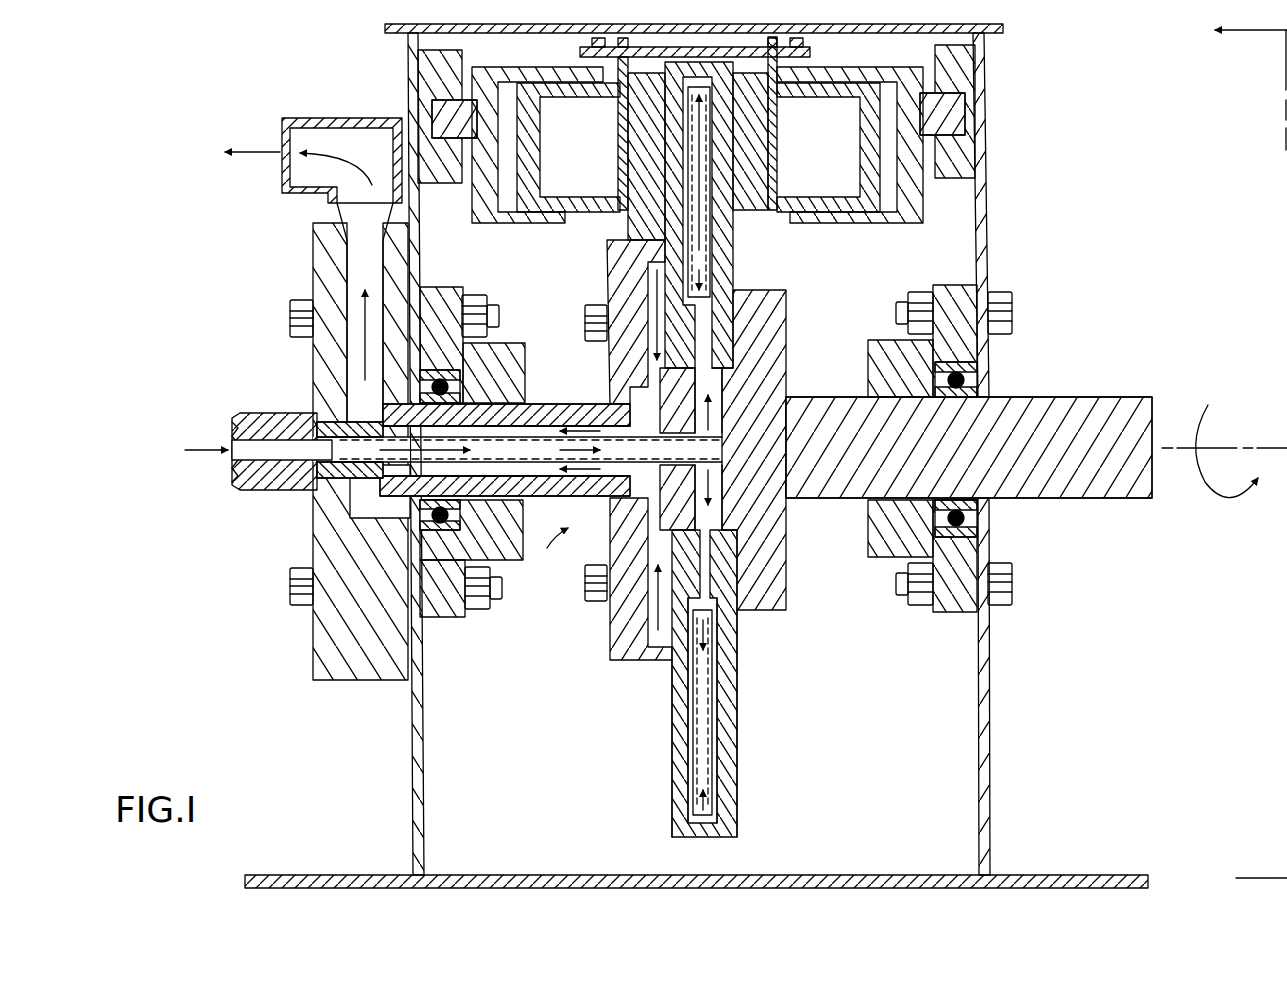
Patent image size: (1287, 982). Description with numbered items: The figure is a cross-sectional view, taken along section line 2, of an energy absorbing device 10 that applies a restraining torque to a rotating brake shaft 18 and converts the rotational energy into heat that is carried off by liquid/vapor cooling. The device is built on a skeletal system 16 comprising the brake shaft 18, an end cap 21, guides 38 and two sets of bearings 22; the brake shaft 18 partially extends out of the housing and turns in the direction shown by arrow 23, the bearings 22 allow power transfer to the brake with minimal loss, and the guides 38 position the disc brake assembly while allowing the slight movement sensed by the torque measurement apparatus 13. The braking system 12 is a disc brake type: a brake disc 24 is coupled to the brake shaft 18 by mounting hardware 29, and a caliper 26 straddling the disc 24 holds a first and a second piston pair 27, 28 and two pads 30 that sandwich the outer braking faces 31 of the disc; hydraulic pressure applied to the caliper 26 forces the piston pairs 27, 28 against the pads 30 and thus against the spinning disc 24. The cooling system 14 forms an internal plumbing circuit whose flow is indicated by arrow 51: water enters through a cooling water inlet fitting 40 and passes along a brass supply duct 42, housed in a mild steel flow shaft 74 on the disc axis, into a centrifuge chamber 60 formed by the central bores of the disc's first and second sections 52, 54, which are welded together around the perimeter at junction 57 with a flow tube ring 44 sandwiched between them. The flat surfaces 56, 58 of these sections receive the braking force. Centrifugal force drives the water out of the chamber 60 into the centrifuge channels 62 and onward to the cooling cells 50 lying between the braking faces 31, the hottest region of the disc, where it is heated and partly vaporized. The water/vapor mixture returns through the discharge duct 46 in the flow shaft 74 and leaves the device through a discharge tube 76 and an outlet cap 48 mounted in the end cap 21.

The section line 2- 2 is at (1233, 454).
The energy absorbing device 10 is at (1100, 212).
The braking system 12 is at (765, 250).
The torque measurement apparatus 13 is at (826, 56).
The cooling system 14 is at (568, 530).
The skeletal system 16 is at (1012, 745).
The brake shaft 18 is at (1032, 397).
The end cap 21 is at (360, 681).
The bearings 22 is at (962, 520).
The arrow 23 is at (1212, 492).
The brake disc 24 is at (740, 793).
The caliper 26 is at (503, 224).
The first piston pair 27 is at (575, 212).
The second piston pair 28 is at (852, 212).
The mounting hardware 29 is at (290, 305).
The pads 30 is at (660, 222).
The braking faces 31 is at (645, 138).
The guides 38 is at (445, 184).
The cooling water inlet fitting 40 is at (275, 490).
The supply duct 42 is at (605, 455).
The flow tube ring 44 is at (714, 668).
The discharge duct 46 is at (555, 430).
The outlet cap 48 is at (357, 118).
The cooling cells 50 is at (718, 248).
The arrow 51 is at (300, 153).
The first section 52 is at (678, 780).
The second section 54 is at (720, 760).
The flat surface 56 is at (672, 685).
The junction 57 is at (215, 447).
The flat surface 58 is at (737, 728).
The centrifuge chamber 60 is at (722, 512).
The centrifuge channels 62 is at (720, 345).
The flow shaft 74 is at (535, 412).
The discharge tube 76 is at (360, 258).